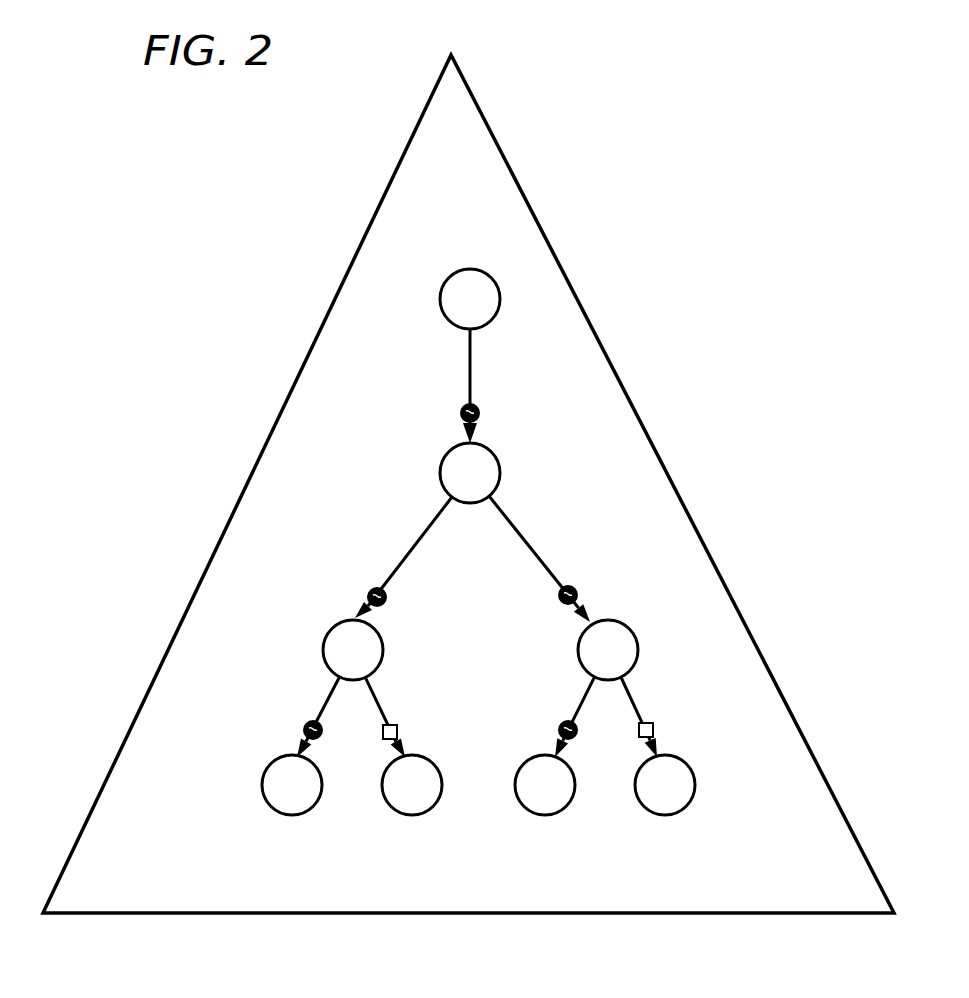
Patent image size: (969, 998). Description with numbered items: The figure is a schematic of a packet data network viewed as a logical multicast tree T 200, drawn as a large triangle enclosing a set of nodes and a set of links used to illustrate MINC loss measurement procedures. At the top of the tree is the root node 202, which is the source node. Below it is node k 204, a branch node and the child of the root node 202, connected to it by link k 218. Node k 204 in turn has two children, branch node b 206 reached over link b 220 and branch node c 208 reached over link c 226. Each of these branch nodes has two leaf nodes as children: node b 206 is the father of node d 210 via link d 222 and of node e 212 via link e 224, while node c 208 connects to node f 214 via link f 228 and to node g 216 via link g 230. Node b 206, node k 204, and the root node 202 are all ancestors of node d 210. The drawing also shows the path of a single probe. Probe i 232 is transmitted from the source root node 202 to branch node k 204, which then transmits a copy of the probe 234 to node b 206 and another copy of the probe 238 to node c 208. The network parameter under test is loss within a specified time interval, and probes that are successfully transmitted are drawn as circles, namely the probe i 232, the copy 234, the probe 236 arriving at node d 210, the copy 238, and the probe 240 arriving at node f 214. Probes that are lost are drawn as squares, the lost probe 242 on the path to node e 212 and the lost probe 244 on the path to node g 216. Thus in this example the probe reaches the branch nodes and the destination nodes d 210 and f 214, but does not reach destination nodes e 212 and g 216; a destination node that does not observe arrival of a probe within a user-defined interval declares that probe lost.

The logical multicast tree T 200 is at (212, 915).
The root node 0 202 is at (440, 300).
The node k 204 is at (440, 463).
The node b 206 is at (325, 628).
The node c 208 is at (640, 634).
The node d 210 is at (292, 815).
The node e 212 is at (412, 815).
The node f 214 is at (545, 815).
The node g 216 is at (665, 815).
The link k 218 is at (470, 350).
The link b 220 is at (420, 548).
The link d 222 is at (330, 700).
The link e 224 is at (370, 700).
The link c 226 is at (530, 548).
The link f 228 is at (587, 690).
The link g 230 is at (633, 710).
The probe i 232 is at (480, 418).
The copy of the probe 234 is at (365, 590).
The probe 236 is at (303, 731).
The copy of the probe 238 is at (578, 590).
The probe 240 is at (558, 731).
The lost probe 242 is at (397, 735).
The lost probe 244 is at (655, 733).